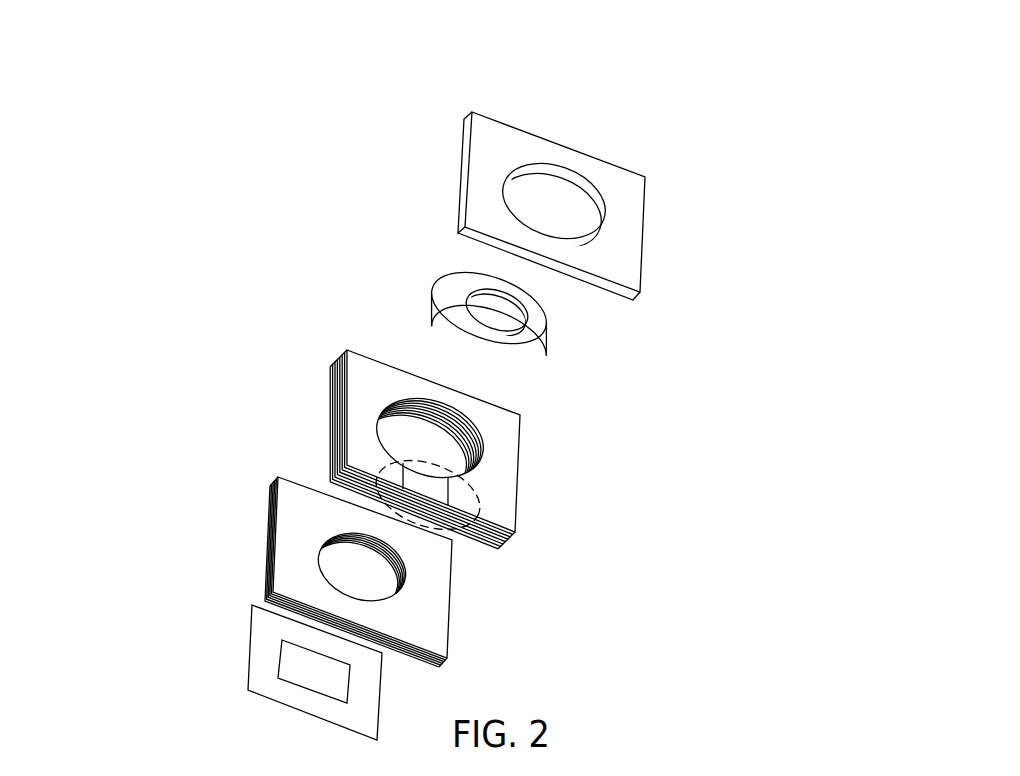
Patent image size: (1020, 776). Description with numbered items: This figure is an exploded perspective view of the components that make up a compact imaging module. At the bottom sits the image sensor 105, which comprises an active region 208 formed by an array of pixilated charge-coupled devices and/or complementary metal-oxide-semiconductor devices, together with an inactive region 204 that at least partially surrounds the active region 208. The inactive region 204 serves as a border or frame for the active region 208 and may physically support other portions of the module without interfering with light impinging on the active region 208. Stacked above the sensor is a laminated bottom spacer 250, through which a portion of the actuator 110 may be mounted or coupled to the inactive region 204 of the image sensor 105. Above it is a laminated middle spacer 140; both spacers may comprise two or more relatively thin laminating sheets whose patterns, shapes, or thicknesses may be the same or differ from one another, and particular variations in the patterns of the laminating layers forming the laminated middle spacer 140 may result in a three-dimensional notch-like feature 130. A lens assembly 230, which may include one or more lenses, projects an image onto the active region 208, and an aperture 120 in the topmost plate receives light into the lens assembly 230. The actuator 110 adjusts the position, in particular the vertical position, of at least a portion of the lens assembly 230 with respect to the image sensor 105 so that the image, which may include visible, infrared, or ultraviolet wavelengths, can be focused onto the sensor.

The aperture 120 is at (598, 126).
The actuator 110 is at (643, 230).
The lens assembly 230 is at (543, 343).
The laminated middle spacer 140 is at (520, 467).
The three-dimensional notch-like feature 130 is at (403, 465).
The laminated bottom spacer 250 is at (450, 603).
The image sensor 105 is at (248, 662).
The inactive region 204 is at (252, 623).
The active region 208 is at (297, 685).